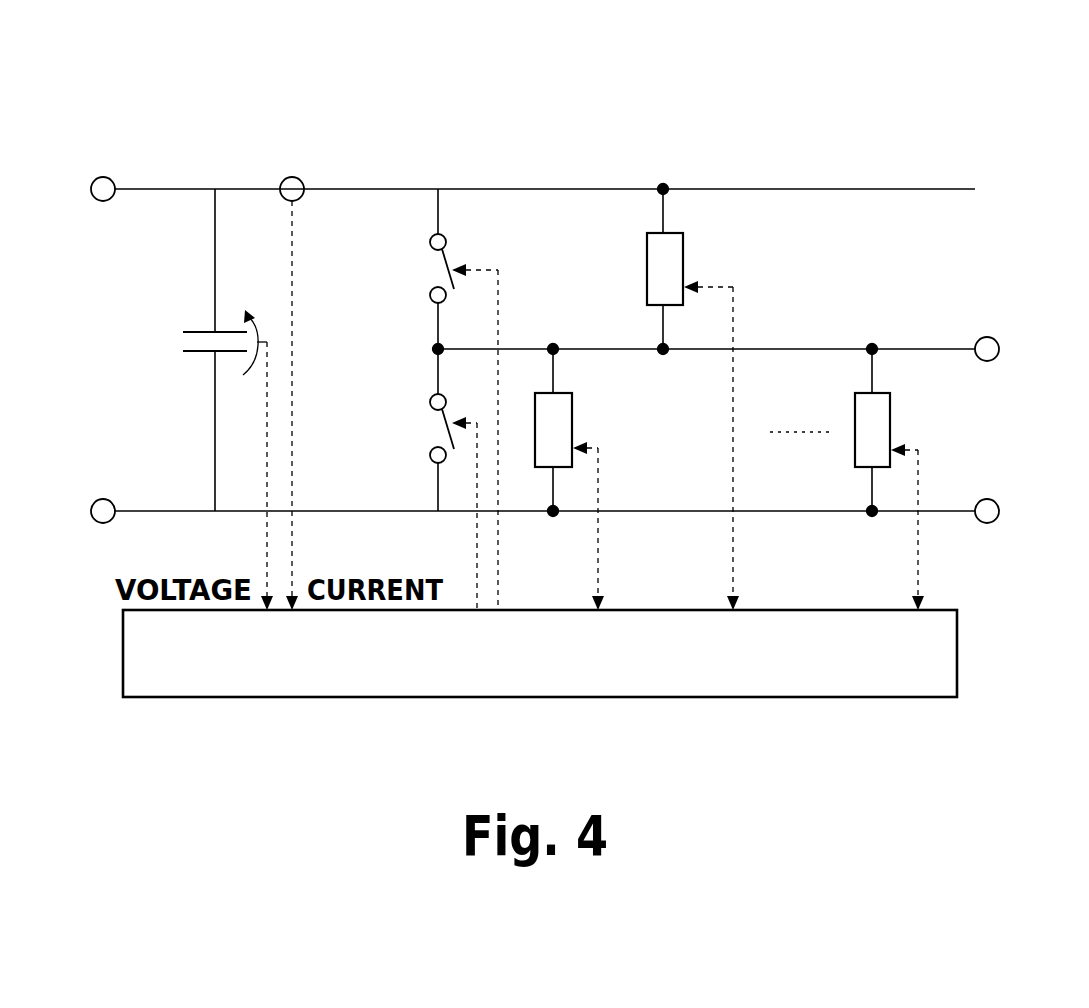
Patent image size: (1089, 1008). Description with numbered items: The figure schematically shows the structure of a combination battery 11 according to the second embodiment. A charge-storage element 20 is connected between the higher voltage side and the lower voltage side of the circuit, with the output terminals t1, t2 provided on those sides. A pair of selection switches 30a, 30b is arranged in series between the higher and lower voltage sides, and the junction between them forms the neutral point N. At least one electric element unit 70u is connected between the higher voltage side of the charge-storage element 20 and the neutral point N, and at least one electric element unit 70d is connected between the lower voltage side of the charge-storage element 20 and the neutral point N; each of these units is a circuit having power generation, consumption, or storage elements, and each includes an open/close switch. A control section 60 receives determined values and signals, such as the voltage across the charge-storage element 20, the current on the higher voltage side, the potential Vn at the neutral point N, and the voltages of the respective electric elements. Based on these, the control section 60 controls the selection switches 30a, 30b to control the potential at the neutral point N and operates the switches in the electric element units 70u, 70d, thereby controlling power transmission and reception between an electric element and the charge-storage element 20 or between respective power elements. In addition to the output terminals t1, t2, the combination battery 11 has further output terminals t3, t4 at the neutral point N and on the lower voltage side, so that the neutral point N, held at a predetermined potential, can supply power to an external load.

The combination battery 11 is at (455, 125).
The charge-storage element 20 is at (182, 322).
The selection switch 30a is at (408, 268).
The selection switch 30b is at (408, 425).
The neutral point N is at (434, 348).
The electric element unit 70u is at (685, 247).
The electric element unit 70d is at (573, 405).
The control section 60 is at (958, 650).
The output terminal t1 is at (103, 177).
The output terminal t2 is at (103, 499).
The output terminal t3 is at (995, 338).
The output terminal t4 is at (995, 500).